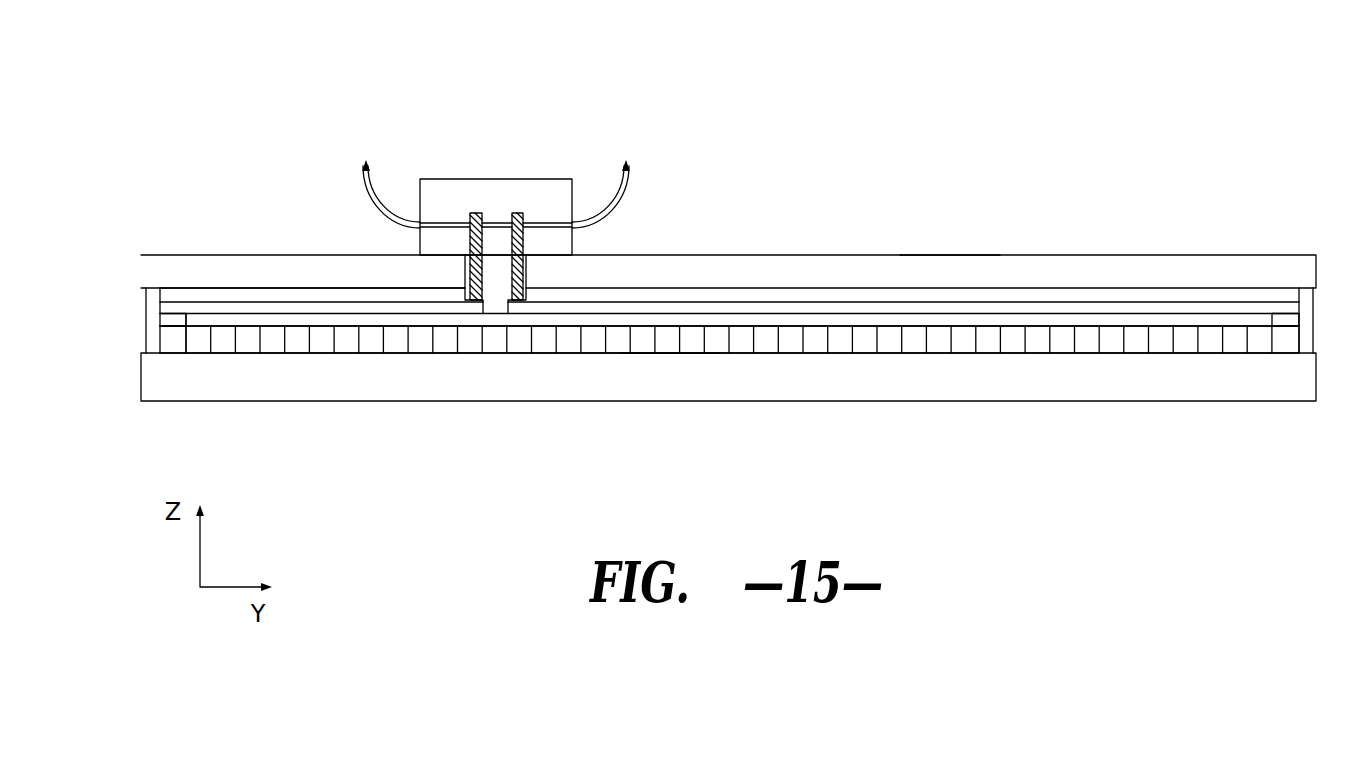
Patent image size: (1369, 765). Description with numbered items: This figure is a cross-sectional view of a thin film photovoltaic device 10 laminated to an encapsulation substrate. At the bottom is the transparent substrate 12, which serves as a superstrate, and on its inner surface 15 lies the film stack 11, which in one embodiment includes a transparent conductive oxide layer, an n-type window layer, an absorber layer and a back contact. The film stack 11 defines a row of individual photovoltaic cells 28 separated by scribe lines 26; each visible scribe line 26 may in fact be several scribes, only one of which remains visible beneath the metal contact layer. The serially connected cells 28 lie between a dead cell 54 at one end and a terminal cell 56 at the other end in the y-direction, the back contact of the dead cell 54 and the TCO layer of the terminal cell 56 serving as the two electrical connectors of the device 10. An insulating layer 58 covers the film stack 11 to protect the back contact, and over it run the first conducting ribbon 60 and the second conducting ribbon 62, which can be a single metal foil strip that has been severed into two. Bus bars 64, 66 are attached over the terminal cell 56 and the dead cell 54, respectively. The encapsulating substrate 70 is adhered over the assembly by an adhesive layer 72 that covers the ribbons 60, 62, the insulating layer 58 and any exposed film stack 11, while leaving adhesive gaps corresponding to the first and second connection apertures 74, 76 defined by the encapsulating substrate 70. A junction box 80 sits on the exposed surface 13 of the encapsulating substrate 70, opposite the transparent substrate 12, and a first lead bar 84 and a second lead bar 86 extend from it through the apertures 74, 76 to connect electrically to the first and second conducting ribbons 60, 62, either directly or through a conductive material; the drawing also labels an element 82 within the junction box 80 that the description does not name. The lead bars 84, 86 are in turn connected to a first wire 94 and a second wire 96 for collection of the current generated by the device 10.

The thin film photovoltaic device 10 is at (1118, 112).
The film stack 11 is at (225, 342).
The transparent substrate 12 is at (1072, 382).
The exposed surface 13 is at (920, 255).
The inner surface 15 is at (668, 353).
The scribe lines 26 is at (555, 340).
The photovoltaic cells 28 is at (297, 345).
The dead cell 54 is at (172, 339).
The terminal cell 56 is at (1288, 340).
The insulating layer 58 is at (277, 320).
The first conducting ribbon 60 is at (747, 310).
The second conducting ribbon 62 is at (222, 300).
The bus bar 64 is at (170, 320).
The bus bar 66 is at (1288, 321).
The encapsulating substrate 70 is at (180, 267).
The adhesive layer 72 is at (152, 300).
The first connection aperture 74 is at (537, 275).
The second connection aperture 76 is at (462, 275).
The junction box 80 is at (543, 190).
The connector lead 82 is at (553, 247).
The first lead bar 84 is at (500, 223).
The second lead bar 86 is at (478, 213).
The first wire 94 is at (625, 183).
The second wire 96 is at (367, 185).